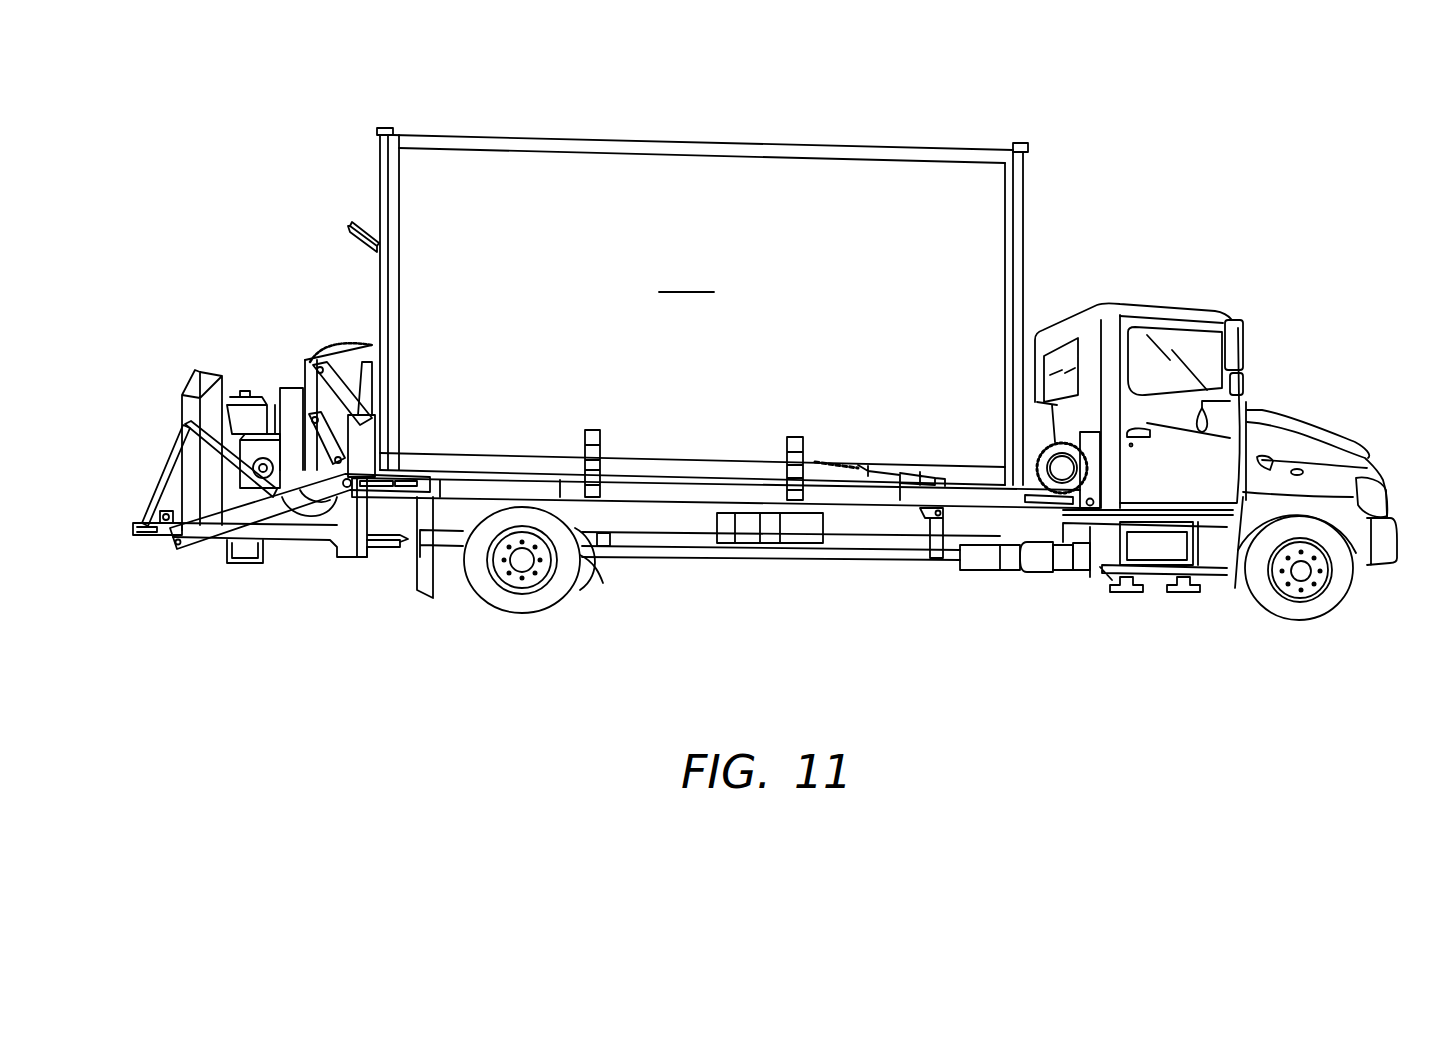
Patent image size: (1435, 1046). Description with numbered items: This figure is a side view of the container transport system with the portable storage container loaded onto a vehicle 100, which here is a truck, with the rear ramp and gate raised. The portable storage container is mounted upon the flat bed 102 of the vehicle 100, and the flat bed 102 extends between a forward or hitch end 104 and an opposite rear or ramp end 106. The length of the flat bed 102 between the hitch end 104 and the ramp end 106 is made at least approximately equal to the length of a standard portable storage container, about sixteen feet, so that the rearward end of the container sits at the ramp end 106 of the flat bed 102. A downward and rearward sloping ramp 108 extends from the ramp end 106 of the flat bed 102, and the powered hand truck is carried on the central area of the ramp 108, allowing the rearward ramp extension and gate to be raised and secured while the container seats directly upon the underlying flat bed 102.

The vehicle 100 is at (1160, 255).
The flat bed 102 is at (630, 490).
The forward or hitch end 104 is at (1107, 508).
The rear or ramp end 106 is at (377, 467).
The ramp 108 is at (210, 545).